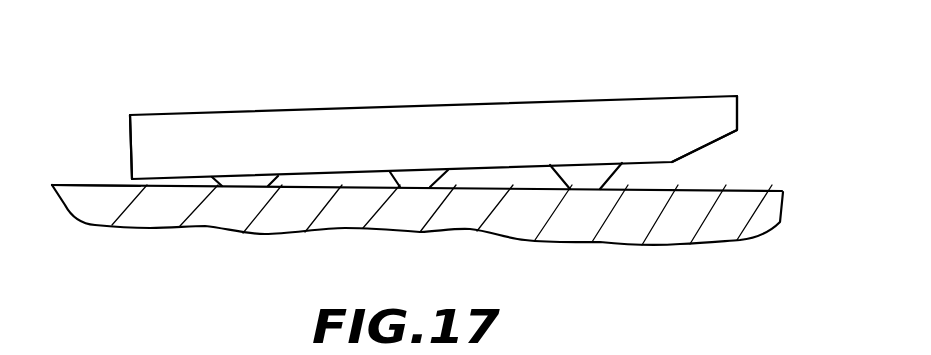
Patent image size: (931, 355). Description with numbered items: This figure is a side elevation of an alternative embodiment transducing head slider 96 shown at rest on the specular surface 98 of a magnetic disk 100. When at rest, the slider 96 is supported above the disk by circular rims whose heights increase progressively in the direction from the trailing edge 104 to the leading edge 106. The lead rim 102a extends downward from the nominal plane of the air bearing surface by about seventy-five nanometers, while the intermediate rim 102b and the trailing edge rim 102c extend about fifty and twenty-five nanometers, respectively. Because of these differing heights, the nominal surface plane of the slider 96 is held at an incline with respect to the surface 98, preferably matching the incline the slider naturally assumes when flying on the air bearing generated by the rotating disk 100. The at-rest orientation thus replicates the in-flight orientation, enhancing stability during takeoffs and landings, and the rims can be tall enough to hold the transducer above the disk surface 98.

The transducing head slider 96 is at (307, 127).
The specular surface 98 is at (72, 186).
The magnetic disk 100 is at (742, 206).
The lead rim 102a is at (588, 182).
The intermediate rim 102b is at (417, 182).
The trailing edge rim 102c is at (237, 181).
The trailing edge 104 is at (128, 142).
The leading edge 106 is at (741, 111).